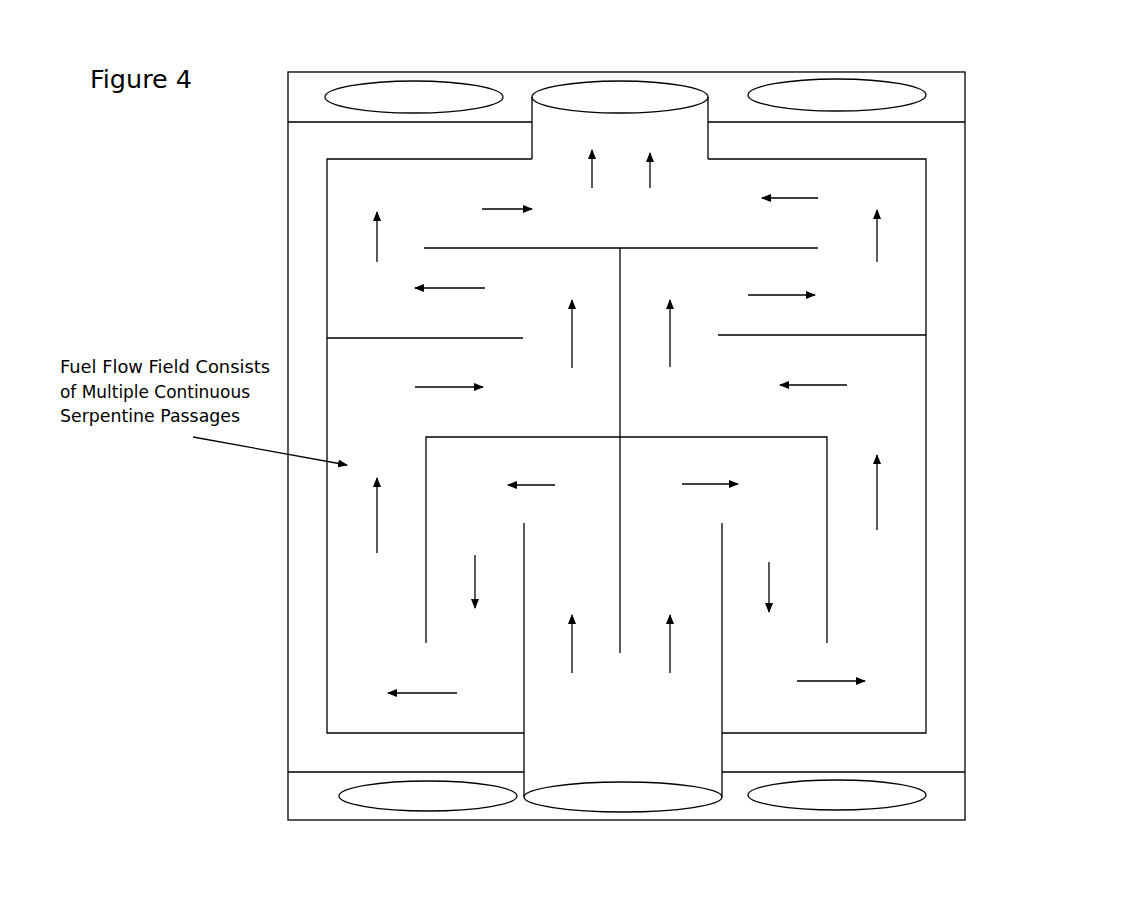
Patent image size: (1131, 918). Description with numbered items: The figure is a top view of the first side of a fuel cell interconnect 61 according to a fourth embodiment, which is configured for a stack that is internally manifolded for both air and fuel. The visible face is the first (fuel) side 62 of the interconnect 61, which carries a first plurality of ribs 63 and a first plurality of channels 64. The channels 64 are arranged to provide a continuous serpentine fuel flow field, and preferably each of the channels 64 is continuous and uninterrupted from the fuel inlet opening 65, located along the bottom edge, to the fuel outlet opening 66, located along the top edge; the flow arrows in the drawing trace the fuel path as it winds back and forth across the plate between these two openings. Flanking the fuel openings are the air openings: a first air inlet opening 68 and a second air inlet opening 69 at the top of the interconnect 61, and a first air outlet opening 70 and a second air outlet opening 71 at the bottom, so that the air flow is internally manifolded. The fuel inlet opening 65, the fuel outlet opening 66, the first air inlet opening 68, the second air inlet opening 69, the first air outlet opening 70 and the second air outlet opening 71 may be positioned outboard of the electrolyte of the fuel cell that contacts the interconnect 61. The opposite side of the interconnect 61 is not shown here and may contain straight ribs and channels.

The interconnect 61 is at (1010, 137).
The first (fuel) side 62 is at (970, 417).
The first plurality of ribs 63 is at (835, 553).
The first plurality of channels 64 is at (900, 516).
The fuel inlet opening 65 is at (622, 808).
The fuel outlet opening 66 is at (633, 77).
The first air inlet opening 68 is at (457, 82).
The second air inlet opening 69 is at (843, 78).
The first air outlet opening 70 is at (487, 807).
The second air outlet opening 71 is at (867, 810).